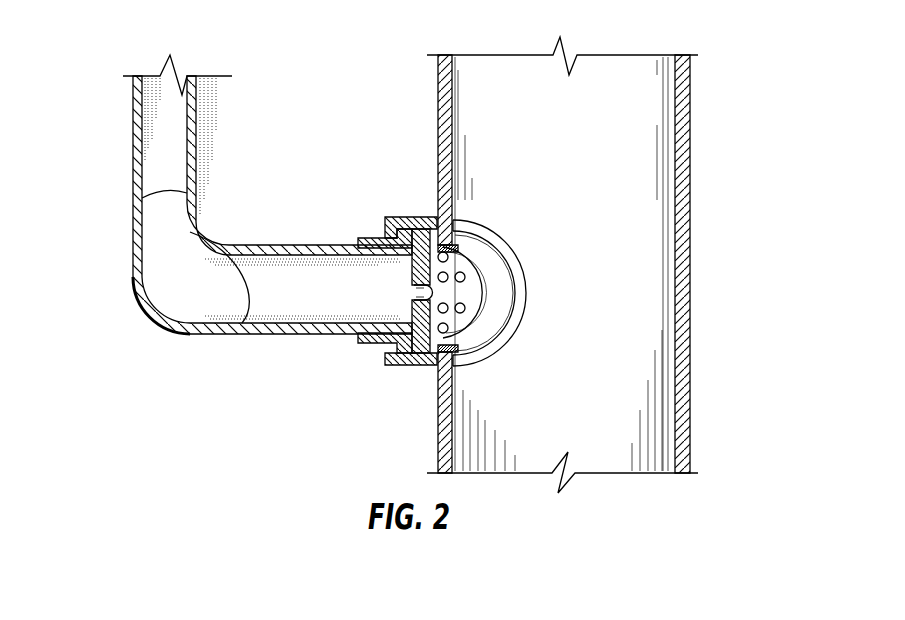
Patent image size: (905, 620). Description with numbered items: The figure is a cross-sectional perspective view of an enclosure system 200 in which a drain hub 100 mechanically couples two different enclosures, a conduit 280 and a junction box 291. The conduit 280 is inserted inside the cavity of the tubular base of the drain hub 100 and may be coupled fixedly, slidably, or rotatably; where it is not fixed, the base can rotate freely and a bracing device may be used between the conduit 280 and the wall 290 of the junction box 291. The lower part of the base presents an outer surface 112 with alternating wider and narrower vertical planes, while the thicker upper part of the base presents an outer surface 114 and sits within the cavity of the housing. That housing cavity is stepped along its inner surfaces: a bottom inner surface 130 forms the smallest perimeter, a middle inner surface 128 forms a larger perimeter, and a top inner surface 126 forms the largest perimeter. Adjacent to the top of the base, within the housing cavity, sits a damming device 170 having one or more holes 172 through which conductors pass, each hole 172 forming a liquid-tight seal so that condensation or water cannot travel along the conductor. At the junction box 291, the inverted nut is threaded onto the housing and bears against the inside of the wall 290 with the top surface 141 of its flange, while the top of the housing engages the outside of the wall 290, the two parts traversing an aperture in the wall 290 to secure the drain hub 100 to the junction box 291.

The drain hub 100 is at (426, 303).
The outer surface 112 is at (376, 238).
The outer surface 114 is at (396, 236).
The top inner surface 126 is at (406, 331).
The middle inner surface 128 is at (402, 355).
The bottom inner surface 130 is at (385, 354).
The top surface 141 is at (492, 240).
The damming device 170 is at (467, 290).
The hole 172 is at (462, 312).
The enclosure system 200 is at (594, 246).
The conduit 280 is at (202, 336).
The wall 290 is at (585, 168).
The junction box 291 is at (648, 135).